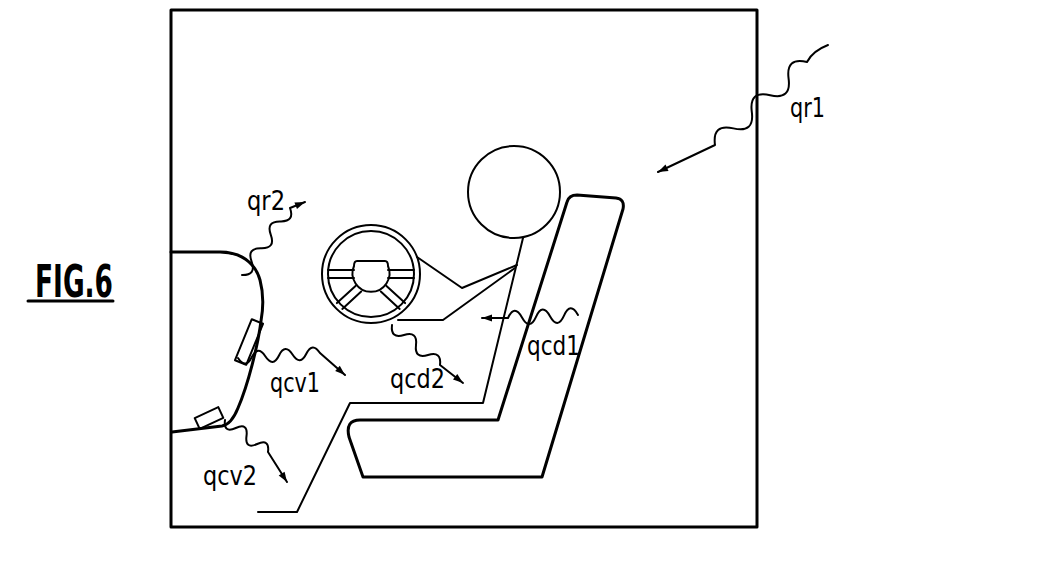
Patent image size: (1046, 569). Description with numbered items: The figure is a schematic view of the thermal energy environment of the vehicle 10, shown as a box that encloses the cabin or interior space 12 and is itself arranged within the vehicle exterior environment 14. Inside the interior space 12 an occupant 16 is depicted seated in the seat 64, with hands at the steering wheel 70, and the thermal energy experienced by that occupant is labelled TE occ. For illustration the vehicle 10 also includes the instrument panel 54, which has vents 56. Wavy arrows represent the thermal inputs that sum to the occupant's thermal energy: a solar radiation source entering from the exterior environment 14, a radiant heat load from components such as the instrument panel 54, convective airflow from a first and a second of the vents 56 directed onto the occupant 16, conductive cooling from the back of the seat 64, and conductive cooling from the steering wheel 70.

The vehicle 10 is at (758, 395).
The interior space 12 is at (561, 80).
The vehicle exterior environment 14 is at (818, 190).
The occupant 16 is at (556, 162).
The instrument panel 54 is at (188, 270).
The vents 56 is at (237, 356).
The seat 64 is at (604, 279).
The steering wheel 70 is at (382, 227).